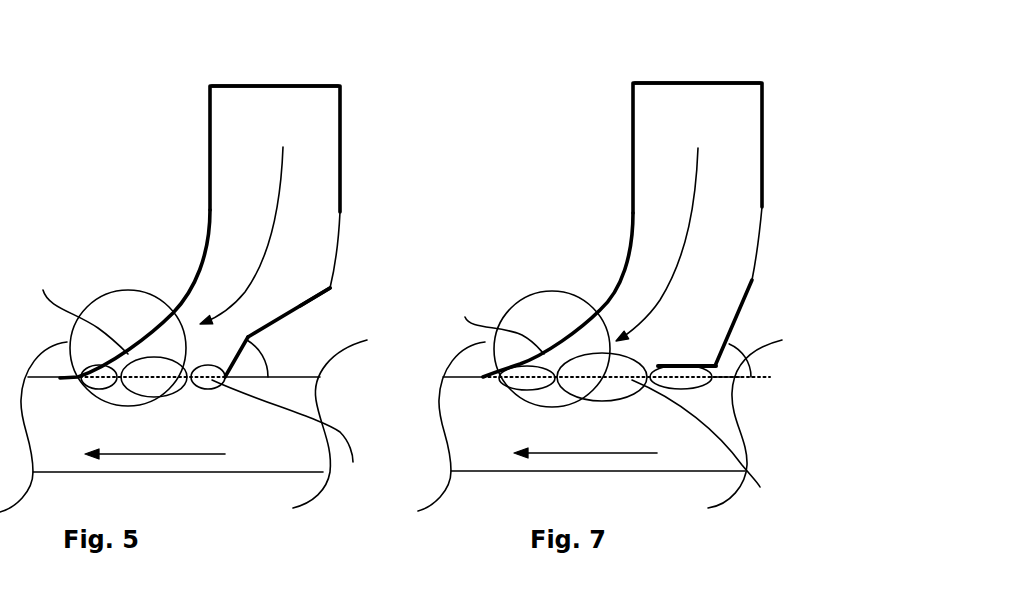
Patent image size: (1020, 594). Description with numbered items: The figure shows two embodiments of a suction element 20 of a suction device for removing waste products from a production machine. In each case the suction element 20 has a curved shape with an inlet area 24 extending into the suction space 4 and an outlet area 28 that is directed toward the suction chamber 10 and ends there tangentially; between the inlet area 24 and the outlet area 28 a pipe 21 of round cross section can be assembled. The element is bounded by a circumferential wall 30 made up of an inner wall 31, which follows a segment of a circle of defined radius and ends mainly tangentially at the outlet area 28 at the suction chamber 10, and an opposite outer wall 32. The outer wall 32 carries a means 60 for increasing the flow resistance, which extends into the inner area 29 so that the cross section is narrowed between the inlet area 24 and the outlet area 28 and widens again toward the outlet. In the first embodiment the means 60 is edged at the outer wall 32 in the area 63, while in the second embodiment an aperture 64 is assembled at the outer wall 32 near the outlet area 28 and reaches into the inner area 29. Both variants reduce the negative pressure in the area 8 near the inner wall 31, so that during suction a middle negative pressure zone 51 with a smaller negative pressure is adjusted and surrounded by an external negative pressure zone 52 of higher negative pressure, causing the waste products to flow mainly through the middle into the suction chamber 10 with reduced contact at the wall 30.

In FIG. 5, the suction space 4 is at (282, 52).
In FIG. 7, the suction space 4 is at (708, 34).
In FIG. 5, the area 8 is at (125, 290).
In FIG. 7, the area 8 is at (535, 295).
In FIG. 5, the suction chamber 10 is at (243, 472).
In FIG. 7, the suction chamber 10 is at (655, 471).
In FIG. 5, the suction element 20 is at (345, 120).
In FIG. 7, the suction element 20 is at (767, 123).
In FIG. 5, the pipe 21 is at (340, 213).
In FIG. 7, the pipe 21 is at (762, 213).
In FIG. 5, the inlet area 24 is at (210, 86).
In FIG. 7, the inlet area 24 is at (633, 83).
In FIG. 5, the outlet area 28 is at (291, 436).
In FIG. 7, the outlet area 28 is at (702, 449).
In FIG. 5, the inner area 29 is at (313, 168).
In FIG. 7, the inner area 29 is at (737, 173).
In FIG. 5, the circumferential wall 30 is at (198, 197).
In FIG. 7, the circumferential wall 30 is at (620, 200).
In FIG. 5, the inner wall 31 is at (79, 308).
In FIG. 7, the inner wall 31 is at (499, 320).
In FIG. 5, the outer wall 32 is at (273, 322).
In FIG. 7, the outer wall 32 is at (735, 340).
In FIG. 5, the middle negative pressure zone 51 is at (160, 399).
In FIG. 7, the middle negative pressure zone 51 is at (508, 387).
In FIG. 5, the external negative pressure zone 52 is at (89, 391).
In FIG. 7, the external negative pressure zone 52 is at (597, 402).
In FIG. 5, the means for increasing flow resistance 60 is at (325, 302).
In FIG. 5, the area 63 is at (250, 338).
In FIG. 7, the aperture 64 is at (688, 363).